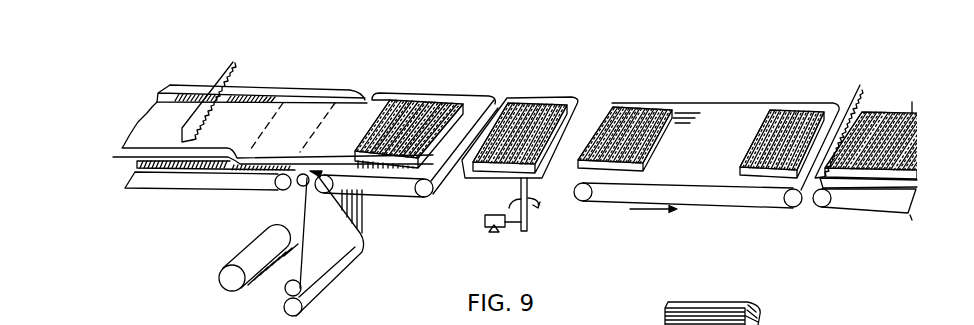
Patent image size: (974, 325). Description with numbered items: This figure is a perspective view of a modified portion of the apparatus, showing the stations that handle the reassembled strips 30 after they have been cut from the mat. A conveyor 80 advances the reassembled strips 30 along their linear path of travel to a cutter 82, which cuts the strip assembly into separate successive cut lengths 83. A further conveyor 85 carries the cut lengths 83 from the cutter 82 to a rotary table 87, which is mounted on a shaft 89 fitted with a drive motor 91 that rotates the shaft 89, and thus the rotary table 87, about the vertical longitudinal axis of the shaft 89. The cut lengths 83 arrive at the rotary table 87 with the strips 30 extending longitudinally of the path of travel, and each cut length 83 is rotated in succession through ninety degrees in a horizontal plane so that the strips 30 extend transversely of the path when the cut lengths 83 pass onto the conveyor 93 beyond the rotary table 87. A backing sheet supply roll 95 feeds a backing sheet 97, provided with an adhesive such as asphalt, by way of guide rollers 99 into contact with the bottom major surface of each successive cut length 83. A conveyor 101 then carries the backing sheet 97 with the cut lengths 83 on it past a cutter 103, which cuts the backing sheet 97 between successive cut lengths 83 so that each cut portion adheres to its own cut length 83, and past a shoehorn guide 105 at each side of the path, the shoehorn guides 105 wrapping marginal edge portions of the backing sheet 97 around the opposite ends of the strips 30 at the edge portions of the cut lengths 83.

The strips 30 is at (672, 104).
The conveyor 80 is at (845, 203).
The cutter 82 is at (861, 95).
The cut lengths 83 is at (447, 122).
The further conveyor 85 is at (705, 200).
The rotary table 87 is at (582, 112).
The shaft 89 is at (532, 187).
The drive motor 91 is at (484, 224).
The conveyor 93 is at (399, 195).
The backing sheet supply roll 95 is at (248, 257).
The backing sheet 97 is at (348, 237).
The guide rollers 99 is at (303, 186).
The conveyor 101 is at (230, 182).
The cutter 103 is at (228, 80).
The shoehorn guide 105 is at (220, 162).